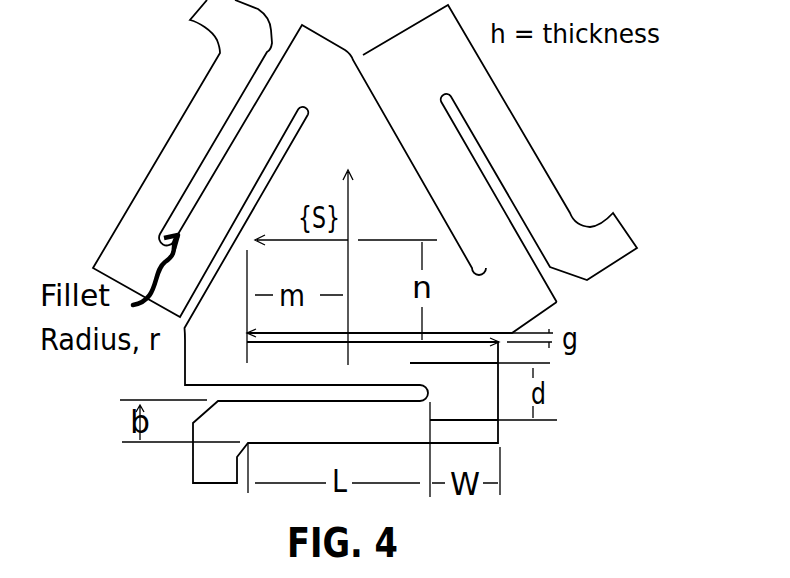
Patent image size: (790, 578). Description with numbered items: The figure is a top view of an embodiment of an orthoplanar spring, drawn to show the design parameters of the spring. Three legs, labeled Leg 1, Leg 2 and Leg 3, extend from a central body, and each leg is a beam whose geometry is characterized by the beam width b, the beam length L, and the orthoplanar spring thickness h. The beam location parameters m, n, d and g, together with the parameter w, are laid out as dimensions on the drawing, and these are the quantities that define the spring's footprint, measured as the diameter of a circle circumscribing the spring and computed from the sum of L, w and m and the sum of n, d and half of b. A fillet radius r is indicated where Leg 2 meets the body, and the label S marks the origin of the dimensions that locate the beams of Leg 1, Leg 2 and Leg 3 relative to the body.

The Leg 1 is at (286, 439).
The Leg 2 is at (195, 158).
The Leg 3 is at (500, 153).
The central body of clip body is at (365, 254).